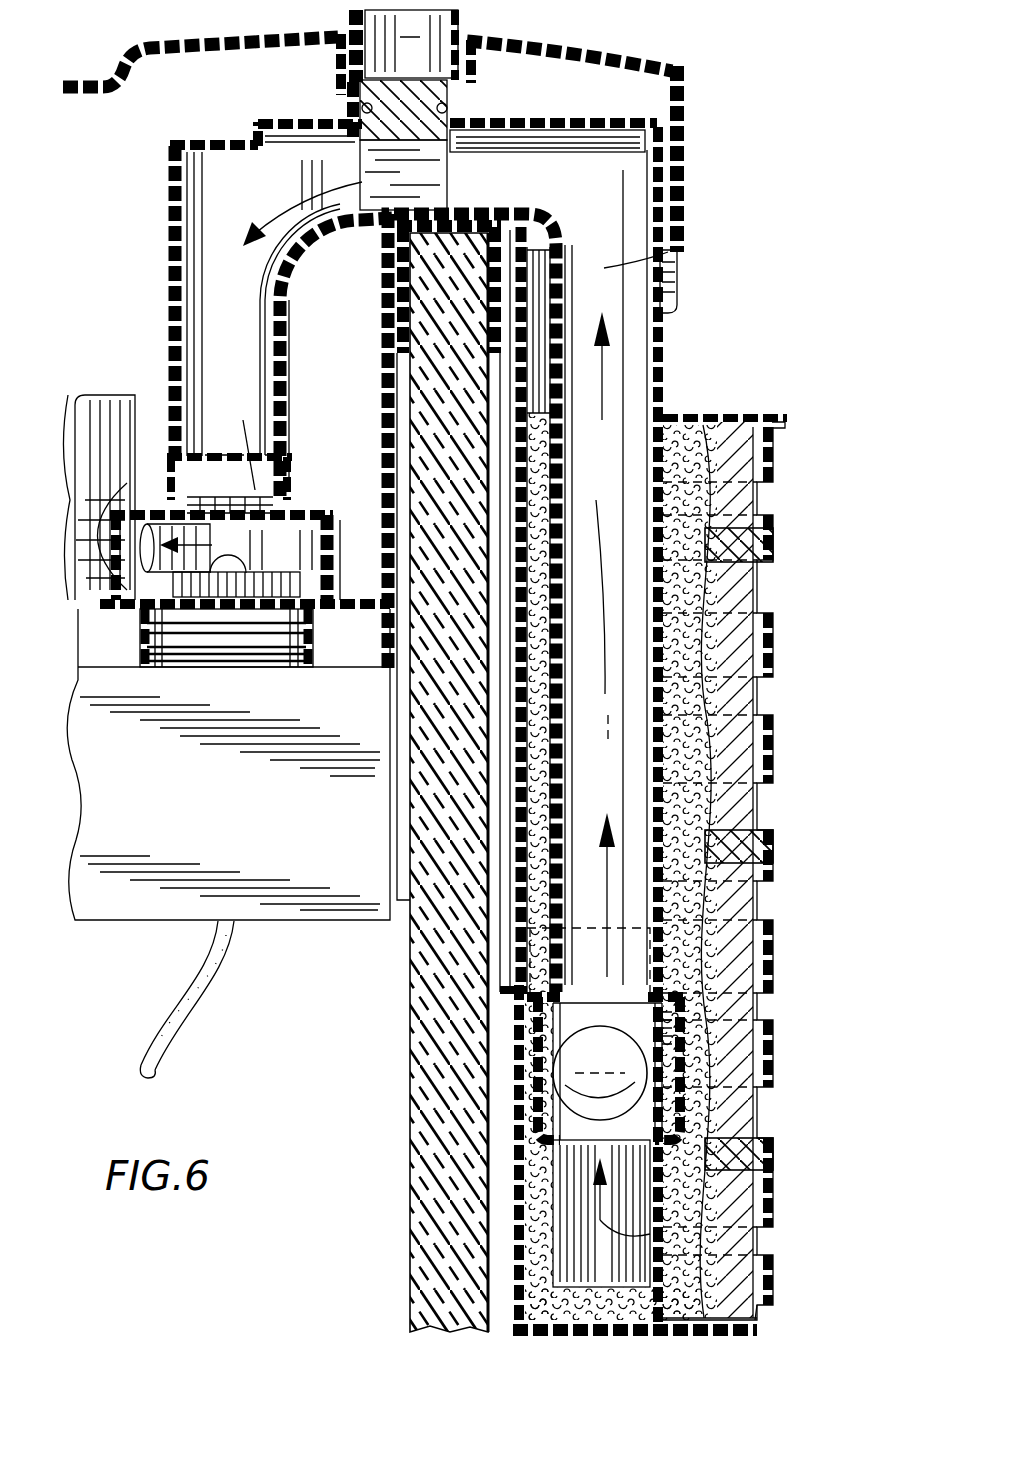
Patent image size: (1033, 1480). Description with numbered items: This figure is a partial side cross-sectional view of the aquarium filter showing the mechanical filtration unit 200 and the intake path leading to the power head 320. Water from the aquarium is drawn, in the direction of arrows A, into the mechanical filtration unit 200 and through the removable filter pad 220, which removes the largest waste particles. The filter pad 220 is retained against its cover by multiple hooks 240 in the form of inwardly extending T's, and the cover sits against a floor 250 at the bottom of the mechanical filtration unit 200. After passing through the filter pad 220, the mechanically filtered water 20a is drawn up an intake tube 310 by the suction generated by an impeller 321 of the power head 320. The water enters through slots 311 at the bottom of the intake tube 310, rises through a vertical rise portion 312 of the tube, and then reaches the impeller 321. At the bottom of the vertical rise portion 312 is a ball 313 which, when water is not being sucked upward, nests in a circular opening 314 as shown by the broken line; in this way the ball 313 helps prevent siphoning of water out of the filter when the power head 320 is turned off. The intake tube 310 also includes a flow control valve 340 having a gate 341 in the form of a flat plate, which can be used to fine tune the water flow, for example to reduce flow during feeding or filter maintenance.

The flow control valve 340 is at (455, 9).
The gate 341 is at (362, 172).
The vertical rise portion 312 is at (672, 252).
The intake tube 310 is at (664, 343).
The filter pad 220 is at (690, 416).
The mechanical filtration unit 200 is at (833, 438).
The mechanically filtered water 20a is at (606, 567).
The impeller 321 is at (276, 664).
The power head 320 is at (332, 921).
The hooks 240 is at (757, 836).
The ball 313 is at (612, 1040).
The circular opening 314 is at (563, 1127).
The slots 311 is at (600, 1222).
The floor 250 is at (740, 1320).
The arrows A is at (675, 672).